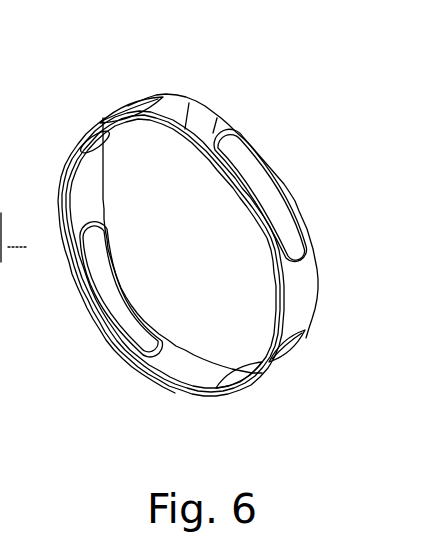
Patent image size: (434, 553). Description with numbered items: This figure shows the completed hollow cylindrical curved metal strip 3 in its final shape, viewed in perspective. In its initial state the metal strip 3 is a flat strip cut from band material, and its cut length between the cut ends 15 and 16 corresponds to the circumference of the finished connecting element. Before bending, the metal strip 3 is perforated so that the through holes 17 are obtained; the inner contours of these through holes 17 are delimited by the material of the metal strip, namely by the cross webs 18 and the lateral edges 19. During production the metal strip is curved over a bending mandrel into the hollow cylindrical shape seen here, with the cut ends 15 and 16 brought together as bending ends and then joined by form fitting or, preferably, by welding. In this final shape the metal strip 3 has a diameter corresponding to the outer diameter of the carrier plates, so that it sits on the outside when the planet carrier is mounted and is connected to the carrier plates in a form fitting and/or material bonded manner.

The metal strip 3 is at (280, 92).
The cut end 15 is at (189, 104).
The cut end 16 is at (186, 135).
The through holes 17 is at (133, 96).
The cross webs 18 is at (207, 108).
The lateral edges 19 is at (266, 150).